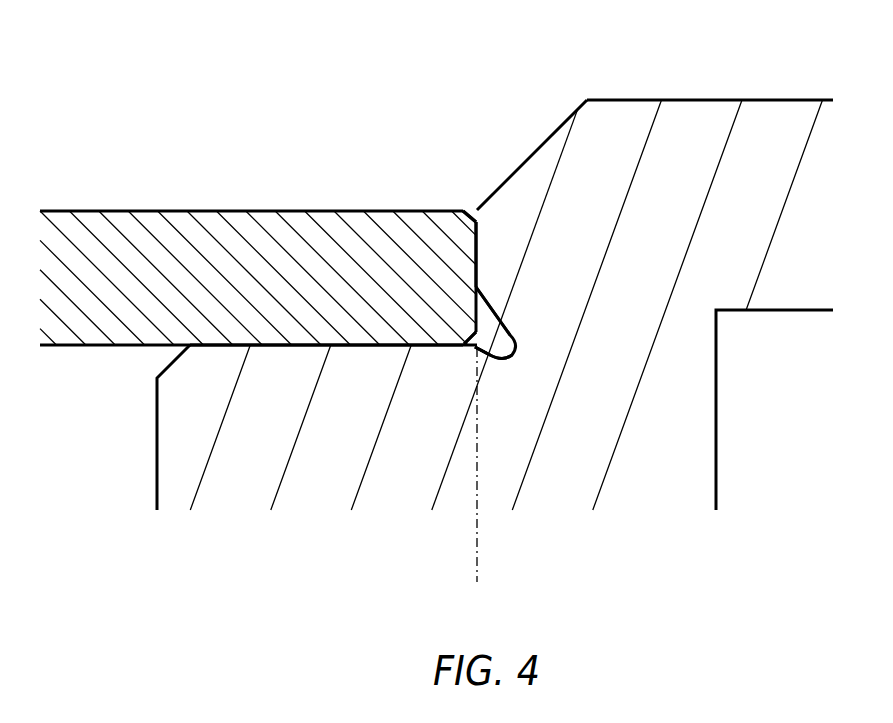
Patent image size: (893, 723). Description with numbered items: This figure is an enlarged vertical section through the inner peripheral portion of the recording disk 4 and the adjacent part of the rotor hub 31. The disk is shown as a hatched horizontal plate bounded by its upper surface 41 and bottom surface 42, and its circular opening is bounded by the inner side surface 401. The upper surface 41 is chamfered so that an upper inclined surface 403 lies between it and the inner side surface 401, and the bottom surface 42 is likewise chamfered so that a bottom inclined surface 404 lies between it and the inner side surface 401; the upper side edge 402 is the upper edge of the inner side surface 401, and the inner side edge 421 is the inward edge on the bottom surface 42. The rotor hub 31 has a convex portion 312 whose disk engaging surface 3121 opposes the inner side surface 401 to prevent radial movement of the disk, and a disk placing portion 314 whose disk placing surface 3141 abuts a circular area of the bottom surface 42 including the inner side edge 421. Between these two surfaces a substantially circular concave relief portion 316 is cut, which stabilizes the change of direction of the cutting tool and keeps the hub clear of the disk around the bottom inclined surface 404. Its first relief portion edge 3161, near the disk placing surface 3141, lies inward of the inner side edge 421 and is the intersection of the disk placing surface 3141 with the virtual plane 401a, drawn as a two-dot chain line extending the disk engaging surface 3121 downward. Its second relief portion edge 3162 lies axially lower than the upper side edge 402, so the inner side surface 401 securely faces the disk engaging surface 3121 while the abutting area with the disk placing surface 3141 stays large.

The recording disk 4 is at (87, 243).
The upper surface 41 is at (120, 210).
The bottom surface 42 is at (135, 347).
The inner side edge 421 is at (462, 347).
The rotor hub 31 is at (755, 100).
The convex portion 312 is at (710, 135).
The disk engaging surface 3121 is at (474, 260).
The disk placing portion 314 is at (170, 470).
The disk placing surface 3141 is at (300, 343).
The relief portion 316 is at (483, 328).
The first relief portion edge 3161 is at (473, 348).
The second relief portion edge 3162 is at (478, 287).
The inner side surface 401 is at (478, 262).
The virtual plane 401a is at (477, 582).
The upper side edge 402 is at (478, 223).
The upper inclined surface 403 is at (470, 210).
The bottom inclined surface 404 is at (475, 347).